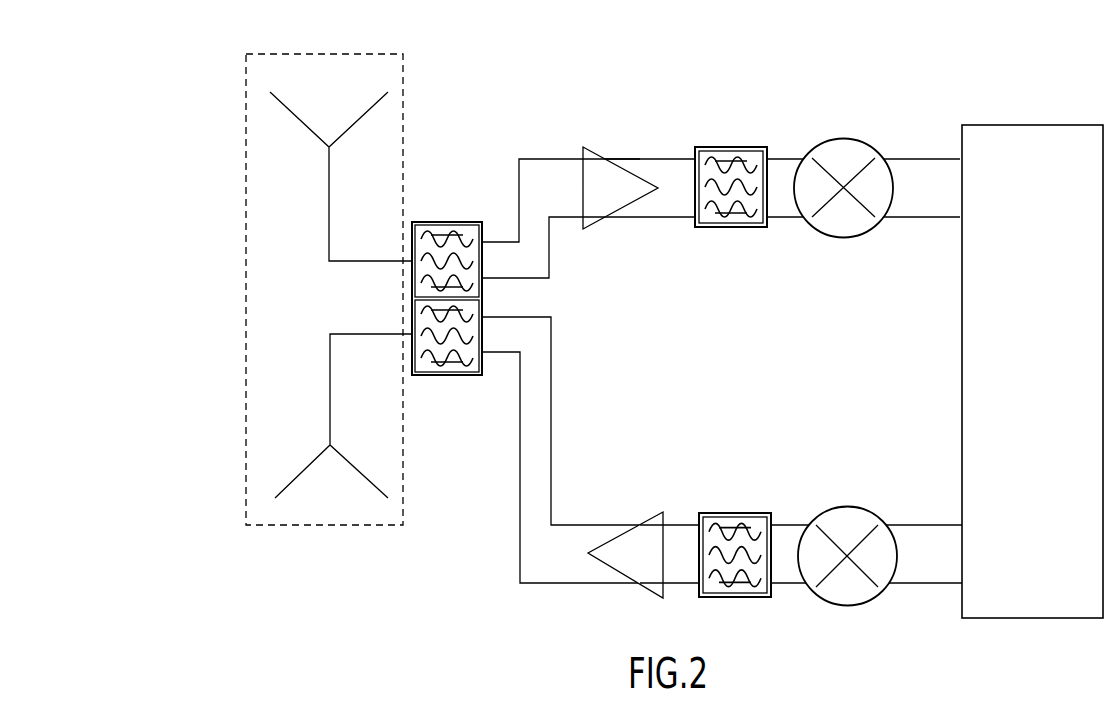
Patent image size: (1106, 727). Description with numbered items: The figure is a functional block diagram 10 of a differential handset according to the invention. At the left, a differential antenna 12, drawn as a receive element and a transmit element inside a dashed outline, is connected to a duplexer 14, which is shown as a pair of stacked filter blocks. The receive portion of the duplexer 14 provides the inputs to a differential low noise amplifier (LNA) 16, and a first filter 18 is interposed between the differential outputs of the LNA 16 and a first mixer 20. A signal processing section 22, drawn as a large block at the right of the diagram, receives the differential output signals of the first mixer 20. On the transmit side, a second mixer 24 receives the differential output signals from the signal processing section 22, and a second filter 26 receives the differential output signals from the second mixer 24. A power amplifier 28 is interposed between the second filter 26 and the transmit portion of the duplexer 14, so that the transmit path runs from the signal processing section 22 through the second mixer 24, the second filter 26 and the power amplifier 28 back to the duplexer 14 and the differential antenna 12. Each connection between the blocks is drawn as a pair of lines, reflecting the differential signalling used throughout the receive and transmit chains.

The functional block diagram 10 is at (182, 79).
The differential antenna 12 is at (246, 311).
The duplexer 14 is at (453, 383).
The differential low noise amplifier (LNA) 16 is at (599, 146).
The first filter 18 is at (730, 146).
The first mixer 20 is at (843, 138).
The signal processing section 22 is at (1016, 123).
The second mixer 24 is at (837, 506).
The second filter 26 is at (735, 512).
The power amplifier 28 is at (656, 513).